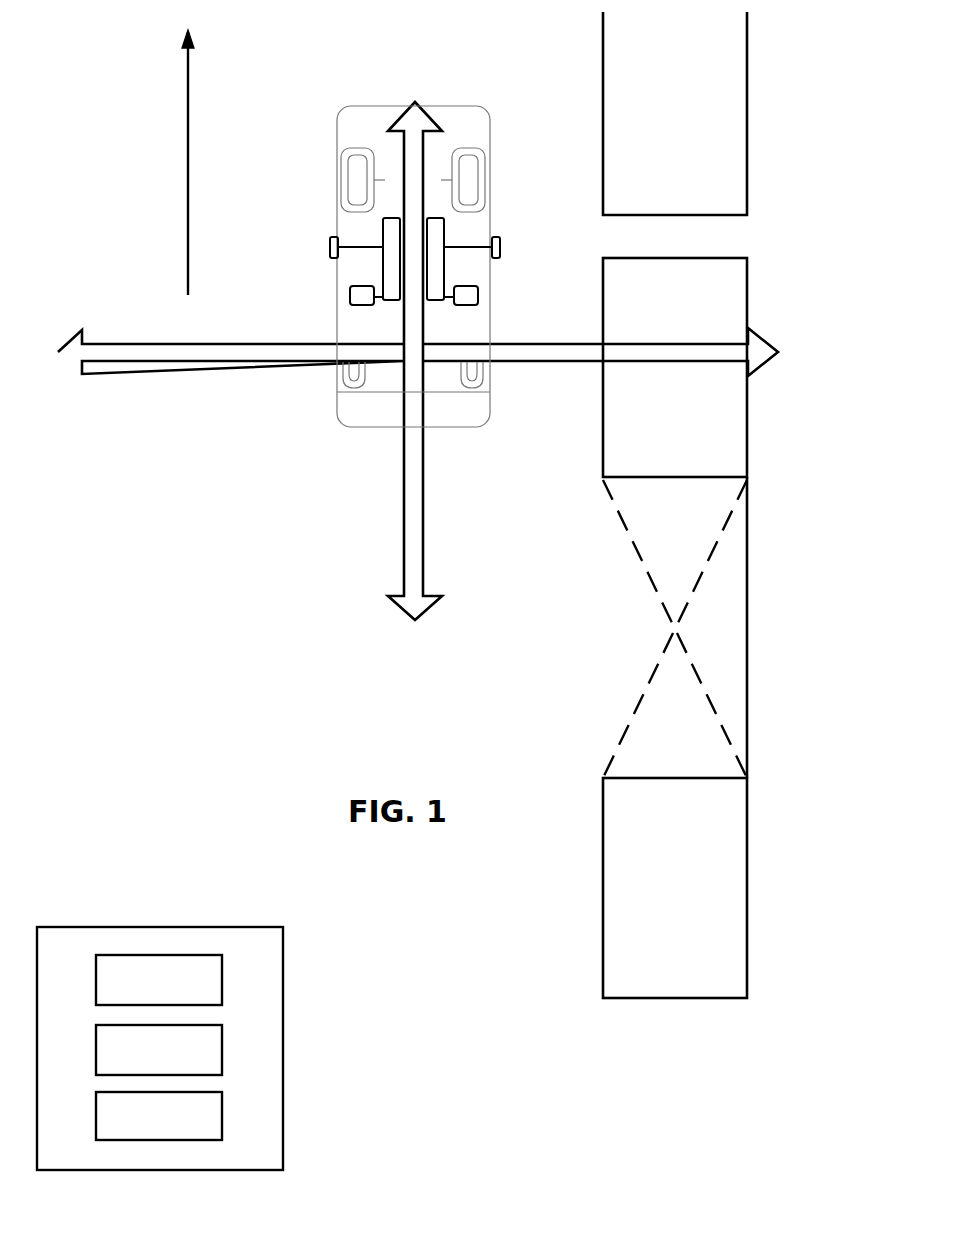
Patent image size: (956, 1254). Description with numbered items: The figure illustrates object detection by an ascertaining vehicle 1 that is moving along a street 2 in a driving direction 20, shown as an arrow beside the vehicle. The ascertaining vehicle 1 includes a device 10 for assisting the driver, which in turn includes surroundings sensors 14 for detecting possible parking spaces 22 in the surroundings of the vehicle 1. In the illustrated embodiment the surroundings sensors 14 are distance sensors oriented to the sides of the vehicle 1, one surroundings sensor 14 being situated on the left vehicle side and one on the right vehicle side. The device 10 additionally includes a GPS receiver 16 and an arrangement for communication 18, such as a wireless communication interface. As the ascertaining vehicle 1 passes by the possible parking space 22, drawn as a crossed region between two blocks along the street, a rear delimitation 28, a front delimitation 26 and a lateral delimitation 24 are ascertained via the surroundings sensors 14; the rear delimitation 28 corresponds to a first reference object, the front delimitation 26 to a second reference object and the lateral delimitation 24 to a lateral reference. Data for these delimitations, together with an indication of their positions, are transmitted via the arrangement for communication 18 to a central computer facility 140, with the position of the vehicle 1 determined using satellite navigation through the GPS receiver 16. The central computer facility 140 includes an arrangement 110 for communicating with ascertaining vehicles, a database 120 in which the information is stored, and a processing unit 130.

The ascertaining vehicle 1 is at (372, 122).
The street 2 is at (228, 563).
The device for assisting the driver 10 is at (376, 234).
The surroundings sensors 14 is at (330, 247).
The GPS receiver 16 is at (350, 297).
The arrangement for communication 18 is at (470, 297).
The driving direction 20 is at (188, 150).
The possible parking space 22 is at (683, 557).
The lateral delimitation 24 is at (748, 660).
The front delimitation 26 is at (682, 437).
The rear delimitation 28 is at (682, 875).
The arrangement for communicating 110 is at (210, 980).
The database 120 is at (210, 1048).
The processing unit 130 is at (210, 1115).
The central computer facility 140 is at (158, 928).